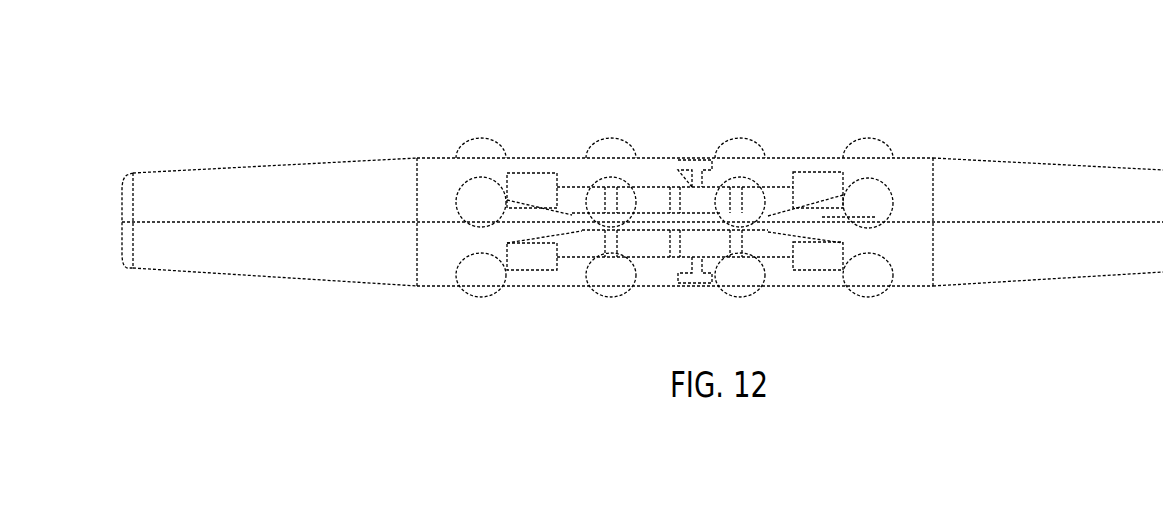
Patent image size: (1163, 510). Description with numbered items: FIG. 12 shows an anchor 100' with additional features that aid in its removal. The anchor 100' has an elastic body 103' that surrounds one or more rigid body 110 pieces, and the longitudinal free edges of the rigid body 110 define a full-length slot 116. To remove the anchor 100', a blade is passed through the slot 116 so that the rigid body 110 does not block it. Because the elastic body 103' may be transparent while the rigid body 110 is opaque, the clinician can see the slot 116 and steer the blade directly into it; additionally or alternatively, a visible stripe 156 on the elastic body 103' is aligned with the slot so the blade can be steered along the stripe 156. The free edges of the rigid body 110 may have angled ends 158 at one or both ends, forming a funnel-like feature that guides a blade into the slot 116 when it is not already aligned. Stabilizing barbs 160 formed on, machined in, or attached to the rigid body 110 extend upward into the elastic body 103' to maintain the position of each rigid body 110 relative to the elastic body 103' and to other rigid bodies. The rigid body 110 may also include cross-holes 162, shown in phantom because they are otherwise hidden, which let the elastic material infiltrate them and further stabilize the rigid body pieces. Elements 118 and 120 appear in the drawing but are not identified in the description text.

The anchor 100' is at (642, 186).
The elastic body 103' is at (642, 180).
The rigid body 110 is at (782, 185).
The slot 116 is at (877, 218).
The upper link 118 is at (658, 211).
The lower link 120 is at (660, 232).
The stripe 156 is at (1020, 223).
The angled ends 158 is at (842, 243).
The barbs 160 is at (690, 283).
The cross-holes 162 is at (670, 204).